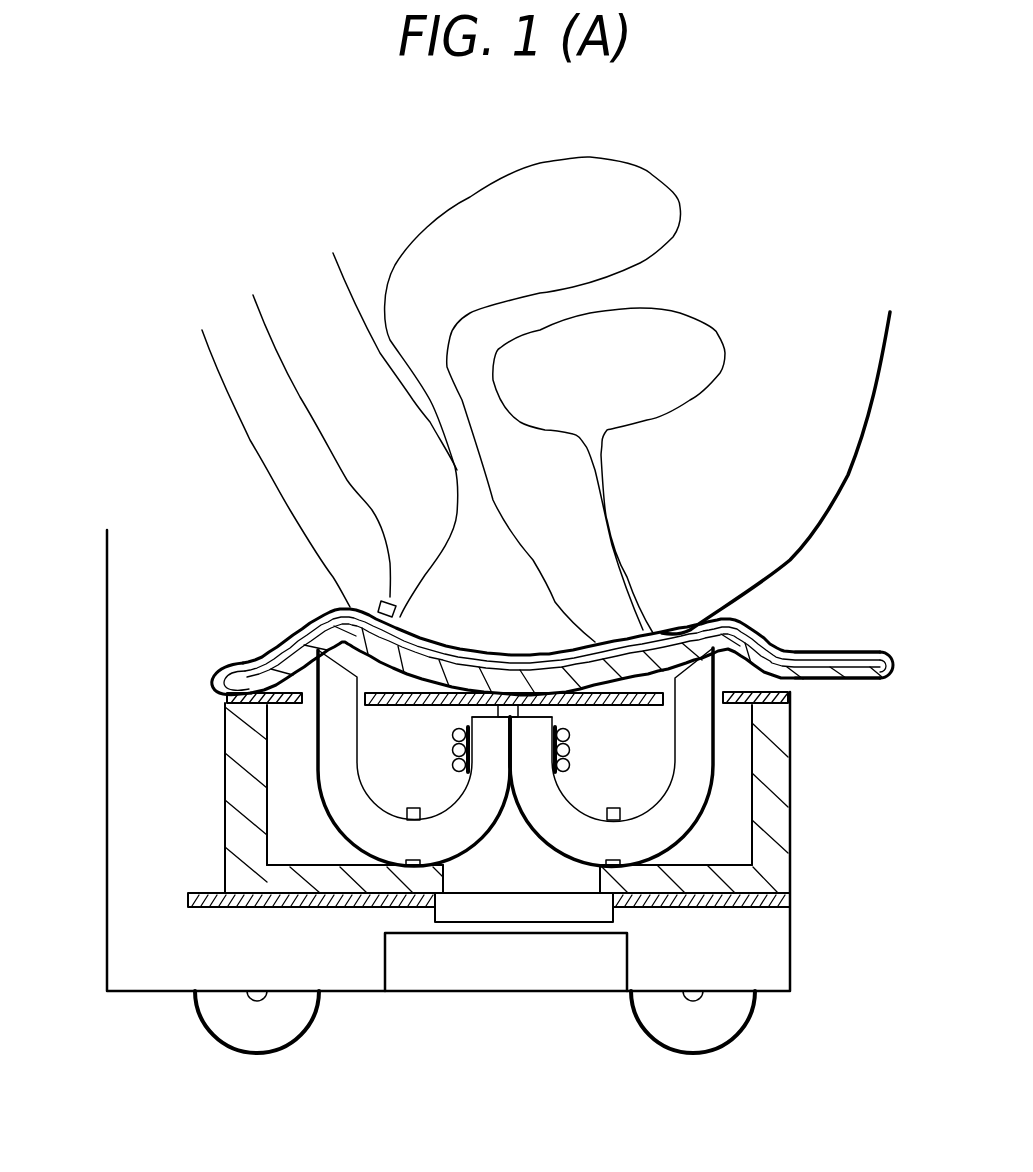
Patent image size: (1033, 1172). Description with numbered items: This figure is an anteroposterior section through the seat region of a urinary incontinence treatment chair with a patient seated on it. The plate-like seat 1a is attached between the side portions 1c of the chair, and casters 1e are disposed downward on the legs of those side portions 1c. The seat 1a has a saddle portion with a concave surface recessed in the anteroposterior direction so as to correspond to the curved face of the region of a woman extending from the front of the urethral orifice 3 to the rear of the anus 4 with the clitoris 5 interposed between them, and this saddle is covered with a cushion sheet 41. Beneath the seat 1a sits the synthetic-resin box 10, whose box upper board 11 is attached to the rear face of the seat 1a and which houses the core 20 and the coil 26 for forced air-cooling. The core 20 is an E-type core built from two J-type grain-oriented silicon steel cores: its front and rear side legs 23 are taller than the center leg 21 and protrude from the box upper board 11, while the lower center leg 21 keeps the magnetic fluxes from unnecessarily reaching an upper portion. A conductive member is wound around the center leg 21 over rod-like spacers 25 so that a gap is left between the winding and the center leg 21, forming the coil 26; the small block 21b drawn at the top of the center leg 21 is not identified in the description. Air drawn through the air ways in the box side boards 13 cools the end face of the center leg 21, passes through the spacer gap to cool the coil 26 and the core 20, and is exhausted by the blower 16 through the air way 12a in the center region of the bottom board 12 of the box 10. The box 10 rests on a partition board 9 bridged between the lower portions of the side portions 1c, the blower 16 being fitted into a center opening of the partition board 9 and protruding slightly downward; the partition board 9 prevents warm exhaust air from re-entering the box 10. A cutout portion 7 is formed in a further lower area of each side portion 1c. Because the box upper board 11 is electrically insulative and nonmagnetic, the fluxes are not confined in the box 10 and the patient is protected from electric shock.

The seat 1a is at (808, 679).
The side portions 1c is at (107, 593).
The casters 1e is at (234, 1053).
The urethral orifice 3 is at (650, 634).
The anus 4 is at (384, 603).
The clitoris 5 is at (565, 643).
The cutout portion 7 is at (388, 960).
The partition board 9 is at (225, 908).
The box 10 is at (213, 805).
The box upper board 11 is at (265, 744).
The bottom board 12 is at (733, 885).
The air way 12a is at (600, 890).
The box side boards 13 is at (791, 778).
The blower 16 is at (520, 915).
The core 20 is at (700, 758).
The center leg 21 is at (532, 770).
The magnet top 21b is at (522, 712).
The side legs 23 is at (333, 730).
The spacers 25 is at (465, 726).
The coil 26 is at (456, 766).
The cushion sheet 41 is at (295, 632).